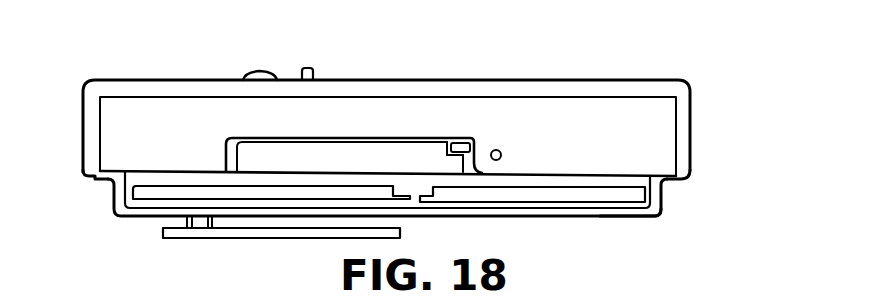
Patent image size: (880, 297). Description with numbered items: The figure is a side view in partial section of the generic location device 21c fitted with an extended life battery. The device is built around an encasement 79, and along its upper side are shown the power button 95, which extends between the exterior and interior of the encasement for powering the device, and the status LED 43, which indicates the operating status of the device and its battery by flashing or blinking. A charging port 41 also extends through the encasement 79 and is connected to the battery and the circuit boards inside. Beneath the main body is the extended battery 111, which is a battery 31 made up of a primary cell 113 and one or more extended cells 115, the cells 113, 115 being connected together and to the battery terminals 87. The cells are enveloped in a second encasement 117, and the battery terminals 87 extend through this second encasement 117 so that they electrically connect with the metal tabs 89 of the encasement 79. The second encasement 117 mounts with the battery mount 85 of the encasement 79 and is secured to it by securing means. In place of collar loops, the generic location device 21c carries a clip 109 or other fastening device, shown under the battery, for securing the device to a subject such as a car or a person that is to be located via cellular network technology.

The generic location device 21c is at (664, 74).
The encasement 79 is at (693, 108).
The power button 95 is at (255, 71).
The status LED 43 is at (311, 68).
The primary cell 113 is at (264, 157).
The battery terminals 87 is at (466, 138).
The metal tabs 89 is at (455, 138).
The charging port 41 is at (496, 150).
The battery mount 85 is at (97, 181).
The extended battery 111 is at (662, 193).
The battery 31 is at (662, 193).
The second encasement 117 is at (645, 213).
The extended cells 115 is at (317, 196).
The clip 109 is at (222, 231).